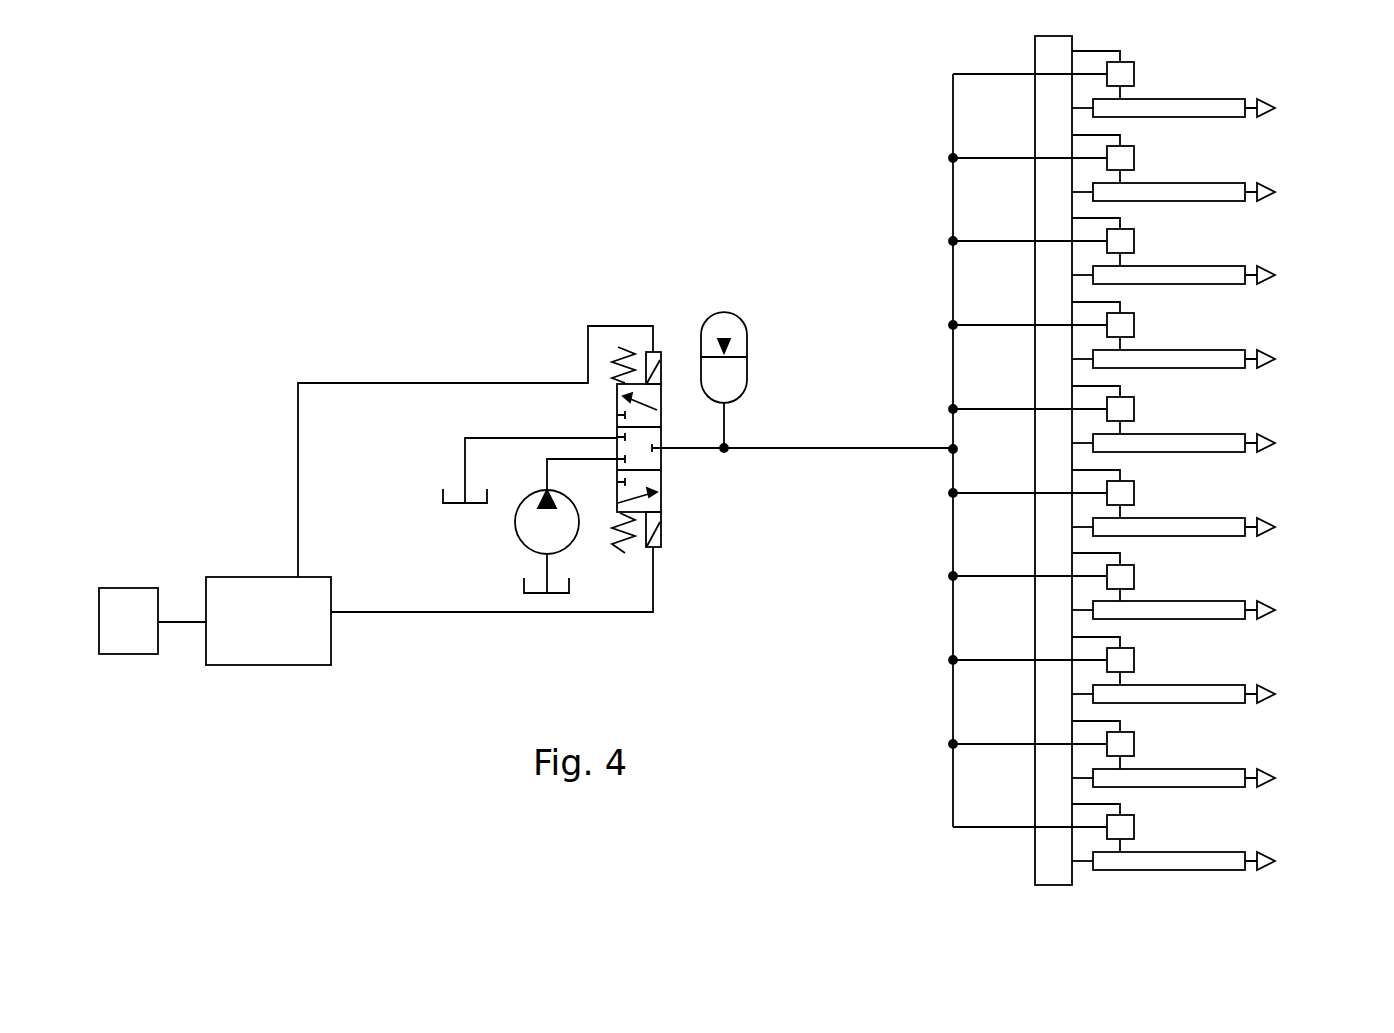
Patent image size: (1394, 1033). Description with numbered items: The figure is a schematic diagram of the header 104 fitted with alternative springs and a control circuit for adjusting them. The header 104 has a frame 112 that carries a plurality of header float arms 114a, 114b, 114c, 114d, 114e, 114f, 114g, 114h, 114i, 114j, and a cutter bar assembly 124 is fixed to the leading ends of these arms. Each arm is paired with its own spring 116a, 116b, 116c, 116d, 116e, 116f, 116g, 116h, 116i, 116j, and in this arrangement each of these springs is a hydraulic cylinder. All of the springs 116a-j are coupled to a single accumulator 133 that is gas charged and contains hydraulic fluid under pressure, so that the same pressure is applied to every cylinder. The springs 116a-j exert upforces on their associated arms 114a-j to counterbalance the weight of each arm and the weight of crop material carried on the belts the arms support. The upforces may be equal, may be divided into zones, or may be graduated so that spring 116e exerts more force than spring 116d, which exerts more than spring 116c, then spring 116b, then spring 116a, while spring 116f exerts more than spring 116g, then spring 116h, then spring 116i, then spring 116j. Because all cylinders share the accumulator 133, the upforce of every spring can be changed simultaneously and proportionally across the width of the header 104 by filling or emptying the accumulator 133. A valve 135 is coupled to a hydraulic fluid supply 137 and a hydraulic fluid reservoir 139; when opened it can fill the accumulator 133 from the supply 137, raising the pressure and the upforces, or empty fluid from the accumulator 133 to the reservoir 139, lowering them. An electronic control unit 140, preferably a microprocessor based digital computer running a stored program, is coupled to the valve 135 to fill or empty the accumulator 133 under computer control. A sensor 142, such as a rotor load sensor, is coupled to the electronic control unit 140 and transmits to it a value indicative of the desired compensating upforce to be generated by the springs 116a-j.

The header 104 is at (1058, 36).
The frame 112 is at (1034, 48).
The header float arm 114a is at (1223, 99).
The header float arm 114b is at (1223, 183).
The header float arm 114c is at (1223, 266).
The header float arm 114d is at (1223, 350).
The header float arm 114e is at (1223, 434).
The header float arm 114f is at (1223, 518).
The header float arm 114g is at (1223, 601).
The header float arm 114h is at (1223, 685).
The header float arm 114i is at (1223, 769).
The header float arm 114j is at (1223, 852).
The spring 116a is at (1134, 74).
The spring 116b is at (1134, 158).
The spring 116c is at (1134, 241).
The spring 116d is at (1134, 325).
The spring 116e is at (1134, 409).
The spring 116f is at (1134, 493).
The spring 116g is at (1134, 576).
The spring 116h is at (1134, 660).
The spring 116i is at (1134, 744).
The spring 116j is at (1134, 827).
The cutter bar assembly 124 is at (1275, 108).
The accumulator 133 is at (743, 313).
The valve 135 is at (617, 405).
The hydraulic fluid supply 137 is at (517, 540).
The hydraulic fluid reservoir 139 is at (522, 588).
The electronic control unit 140 is at (227, 666).
The sensor 142 is at (123, 655).